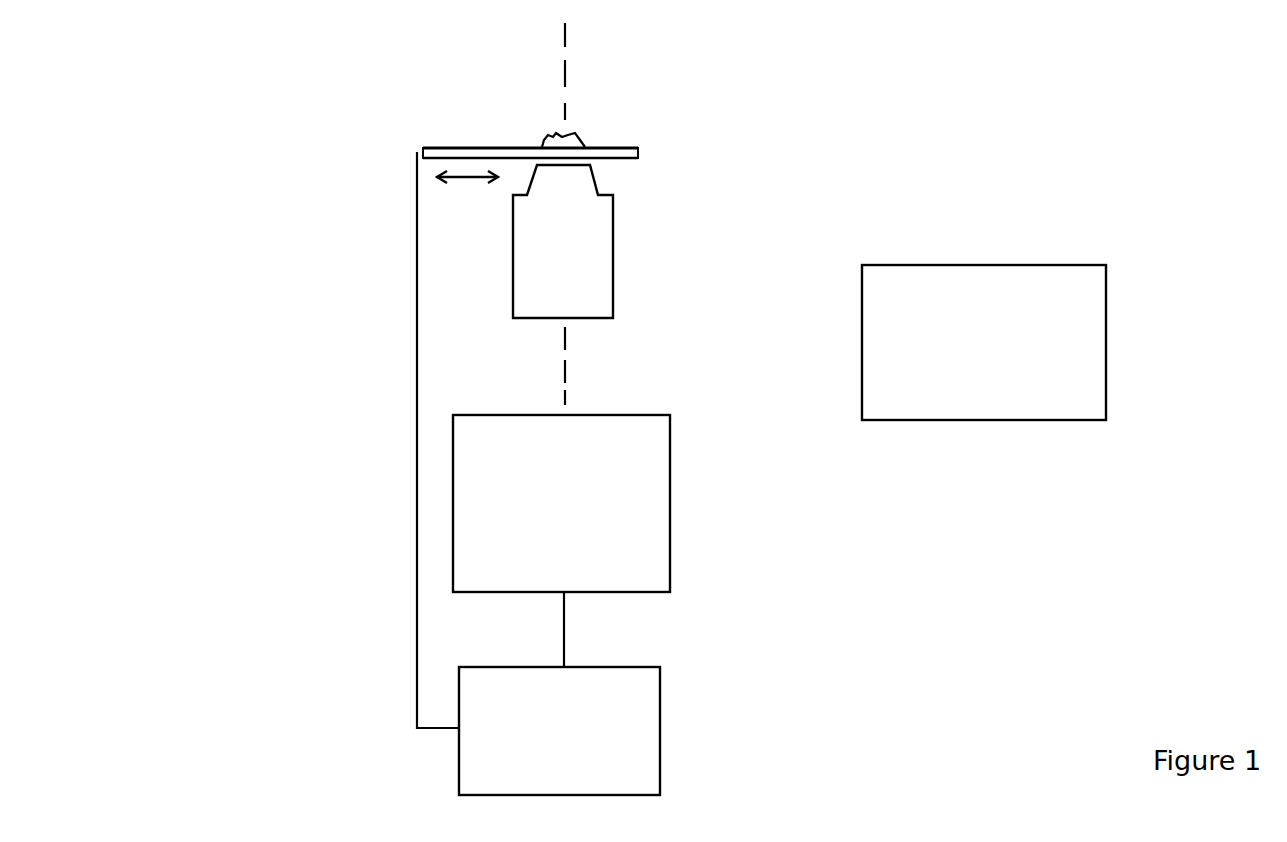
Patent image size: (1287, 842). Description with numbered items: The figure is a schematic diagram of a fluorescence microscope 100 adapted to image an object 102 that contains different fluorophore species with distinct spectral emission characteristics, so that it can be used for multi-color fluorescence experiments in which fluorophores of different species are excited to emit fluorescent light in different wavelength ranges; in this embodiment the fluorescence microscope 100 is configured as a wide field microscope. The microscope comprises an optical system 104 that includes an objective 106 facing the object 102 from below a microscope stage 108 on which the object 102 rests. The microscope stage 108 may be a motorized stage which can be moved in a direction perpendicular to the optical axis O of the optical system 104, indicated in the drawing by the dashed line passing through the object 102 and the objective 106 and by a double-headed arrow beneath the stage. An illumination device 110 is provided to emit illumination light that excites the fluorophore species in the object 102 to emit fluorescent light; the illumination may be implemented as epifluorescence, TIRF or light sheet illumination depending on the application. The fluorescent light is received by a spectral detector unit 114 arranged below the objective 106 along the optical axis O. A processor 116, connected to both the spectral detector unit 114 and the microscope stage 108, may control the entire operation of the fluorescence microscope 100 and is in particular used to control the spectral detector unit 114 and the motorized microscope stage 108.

The fluorescence microscope 100 is at (1268, 119).
The optical axis O is at (565, 62).
The object 102 is at (582, 147).
The optical system 104 is at (313, 406).
The objective 106 is at (613, 295).
The microscope stage 108 is at (447, 148).
The illumination device 110 is at (1106, 368).
The spectral detector unit 114 is at (672, 538).
The processor 116 is at (661, 763).